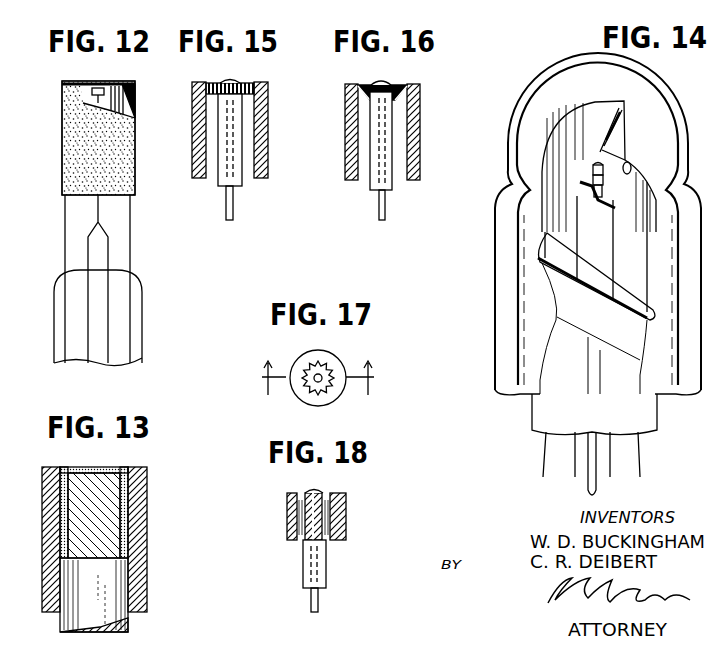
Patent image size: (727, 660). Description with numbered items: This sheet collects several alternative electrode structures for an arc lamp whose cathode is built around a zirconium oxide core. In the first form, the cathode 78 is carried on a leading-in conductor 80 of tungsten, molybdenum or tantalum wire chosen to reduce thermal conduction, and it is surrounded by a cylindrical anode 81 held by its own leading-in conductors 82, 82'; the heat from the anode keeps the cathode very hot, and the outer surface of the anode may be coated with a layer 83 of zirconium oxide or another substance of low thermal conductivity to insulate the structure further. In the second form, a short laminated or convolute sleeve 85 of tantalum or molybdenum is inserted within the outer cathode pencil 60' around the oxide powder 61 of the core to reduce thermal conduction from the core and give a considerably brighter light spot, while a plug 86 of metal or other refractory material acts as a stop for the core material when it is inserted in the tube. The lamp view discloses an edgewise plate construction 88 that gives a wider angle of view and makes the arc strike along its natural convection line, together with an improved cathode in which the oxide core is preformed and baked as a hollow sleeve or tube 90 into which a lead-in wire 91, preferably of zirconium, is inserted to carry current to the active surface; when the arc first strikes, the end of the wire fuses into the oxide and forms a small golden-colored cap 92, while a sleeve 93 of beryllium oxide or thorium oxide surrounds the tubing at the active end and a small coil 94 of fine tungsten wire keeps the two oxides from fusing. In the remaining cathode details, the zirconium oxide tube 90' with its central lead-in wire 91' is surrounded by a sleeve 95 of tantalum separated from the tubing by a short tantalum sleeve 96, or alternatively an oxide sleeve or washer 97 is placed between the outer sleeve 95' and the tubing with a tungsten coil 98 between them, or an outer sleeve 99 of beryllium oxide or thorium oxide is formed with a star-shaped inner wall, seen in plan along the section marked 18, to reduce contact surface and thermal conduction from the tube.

In FIG. 12, the cathode 78 is at (92, 91).
In FIG. 12, the leading-in conductor 80 is at (98, 206).
In FIG. 12, the cylindrical anode 81 is at (133, 88).
In FIG. 12, the leading-in conductor 82 is at (46, 279).
In FIG. 13, the leading-in conductor 82 is at (94, 459).
In FIG. 12, the leading-in conductor 82' is at (149, 279).
In FIG. 12, the layer of zirconium oxide 83 is at (72, 140).
In FIG. 13, the laminated or convolute sleeve 85 is at (63, 505).
In FIG. 13, the plug 86 is at (60, 622).
In FIG. 13, the outer cathode pencil 60' is at (75, 539).
In FIG. 13, the oxide powder 61 is at (94, 515).
In FIG. 14, the edgewise plate construction 88 is at (626, 128).
In FIG. 14, the hollow sleeve or tube 90 is at (612, 195).
In FIG. 15, the zirconium oxide tube 90' is at (248, 148).
In FIG. 16, the zirconium oxide tube 90' is at (400, 148).
In FIG. 18, the zirconium oxide tube 90' is at (333, 564).
In FIG. 14, the lead-in wire 91 is at (596, 288).
In FIG. 15, the lead-in wire 91' is at (247, 205).
In FIG. 16, the lead-in wire 91' is at (399, 207).
In FIG. 18, the lead-in wire 91' is at (299, 601).
In FIG. 15, the cap 92 is at (236, 82).
In FIG. 16, the cap 92 is at (380, 84).
In FIG. 17, the cap 92 is at (315, 386).
In FIG. 18, the cap 92 is at (313, 492).
In FIG. 14, the cap 92 is at (598, 164).
In FIG. 14, the sleeve of beryllium oxide or thorium oxide 93 is at (593, 178).
In FIG. 14, the coil of fine tungsten wire 94 is at (590, 187).
In FIG. 15, the sleeve 95 is at (244, 130).
In FIG. 16, the outer sleeve 95' is at (399, 132).
In FIG. 15, the short sleeve of tantalum 96 is at (215, 88).
In FIG. 16, the sleeve or washer 97 is at (399, 90).
In FIG. 16, the coil of tungsten wire 98 is at (370, 98).
In FIG. 17, the outer sleeve 99 is at (326, 353).
In FIG. 18, the outer sleeve 99 is at (346, 523).
In FIG. 17, the section line 18 is at (317, 383).